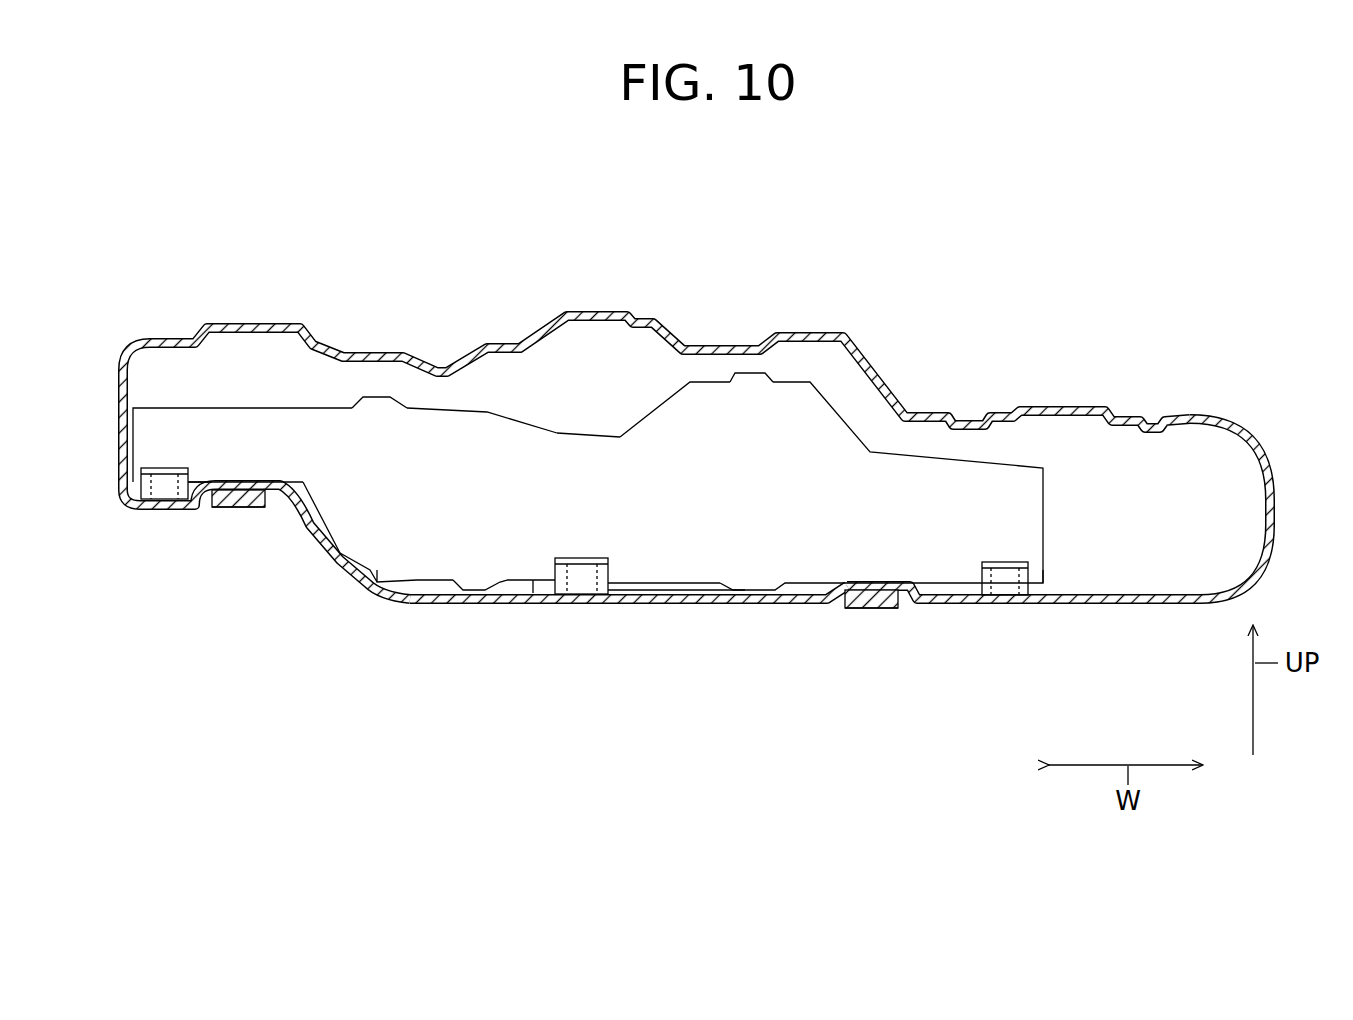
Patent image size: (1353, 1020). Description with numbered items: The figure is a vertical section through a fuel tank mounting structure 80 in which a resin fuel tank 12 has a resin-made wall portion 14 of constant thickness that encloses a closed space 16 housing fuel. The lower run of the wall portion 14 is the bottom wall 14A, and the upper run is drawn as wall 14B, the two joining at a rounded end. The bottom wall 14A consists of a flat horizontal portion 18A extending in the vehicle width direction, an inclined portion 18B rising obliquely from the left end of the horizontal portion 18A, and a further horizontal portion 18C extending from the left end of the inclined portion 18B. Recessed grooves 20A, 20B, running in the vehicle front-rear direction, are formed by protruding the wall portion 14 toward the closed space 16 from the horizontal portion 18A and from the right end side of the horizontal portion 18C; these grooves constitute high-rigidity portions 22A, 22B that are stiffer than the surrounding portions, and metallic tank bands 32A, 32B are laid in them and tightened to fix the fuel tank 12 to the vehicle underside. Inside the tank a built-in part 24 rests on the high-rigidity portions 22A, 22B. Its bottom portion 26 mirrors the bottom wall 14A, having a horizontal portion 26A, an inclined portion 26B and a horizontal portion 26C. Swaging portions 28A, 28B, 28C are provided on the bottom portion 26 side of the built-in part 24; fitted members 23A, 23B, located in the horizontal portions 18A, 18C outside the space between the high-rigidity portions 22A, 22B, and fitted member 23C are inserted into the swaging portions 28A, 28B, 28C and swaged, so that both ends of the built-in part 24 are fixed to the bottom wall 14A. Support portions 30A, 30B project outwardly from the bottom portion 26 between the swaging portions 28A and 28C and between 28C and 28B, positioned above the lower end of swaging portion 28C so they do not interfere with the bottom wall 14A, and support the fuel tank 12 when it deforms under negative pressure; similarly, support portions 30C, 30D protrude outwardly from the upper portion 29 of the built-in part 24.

The fuel tank mounting structure 80 is at (1040, 253).
The fuel tank 12 is at (1063, 407).
The wall portion 14 is at (1195, 417).
The bottom wall 14A is at (1067, 604).
The upper wall of outer panel 14B is at (830, 333).
The closed space 16 is at (1106, 515).
The horizontal portion 18A is at (700, 604).
The inclined portion 18B is at (300, 540).
The horizontal portion 18C is at (170, 512).
The recessed groove 20A is at (835, 598).
The recessed groove 20B is at (205, 500).
The high-rigidity portion 22A is at (868, 589).
The high-rigidity portion 22B is at (237, 489).
The fitted member 23A is at (1027, 578).
The fitted member 23B is at (195, 482).
The fitted member 23C is at (610, 574).
The built-in part 24 is at (493, 410).
The bottom portion 26 is at (670, 586).
The horizontal portion 26A is at (533, 591).
The inclined portion 26B is at (369, 585).
The horizontal portion 26C is at (298, 487).
The swaging portion 28A is at (1007, 566).
The swaging portion 28B is at (165, 467).
The swaging portion 28C is at (583, 557).
The upper portion 29 is at (583, 436).
The support portion 30A is at (747, 594).
The support portion 30B is at (485, 593).
The support portion 30C is at (747, 372).
The support portion 30D is at (373, 396).
The tank band 32A is at (873, 609).
The tank band 32B is at (247, 508).